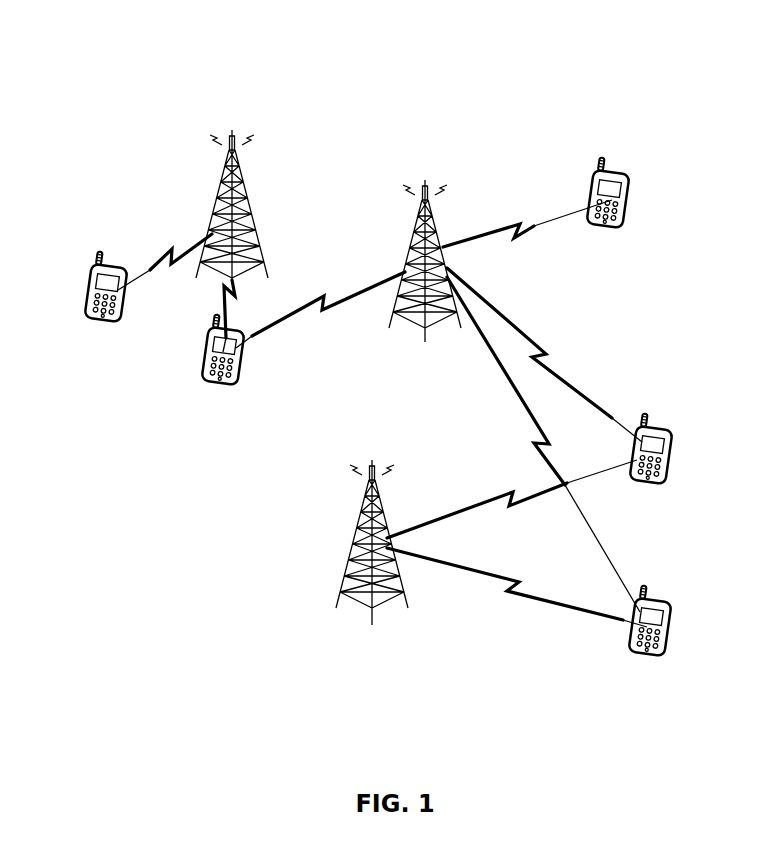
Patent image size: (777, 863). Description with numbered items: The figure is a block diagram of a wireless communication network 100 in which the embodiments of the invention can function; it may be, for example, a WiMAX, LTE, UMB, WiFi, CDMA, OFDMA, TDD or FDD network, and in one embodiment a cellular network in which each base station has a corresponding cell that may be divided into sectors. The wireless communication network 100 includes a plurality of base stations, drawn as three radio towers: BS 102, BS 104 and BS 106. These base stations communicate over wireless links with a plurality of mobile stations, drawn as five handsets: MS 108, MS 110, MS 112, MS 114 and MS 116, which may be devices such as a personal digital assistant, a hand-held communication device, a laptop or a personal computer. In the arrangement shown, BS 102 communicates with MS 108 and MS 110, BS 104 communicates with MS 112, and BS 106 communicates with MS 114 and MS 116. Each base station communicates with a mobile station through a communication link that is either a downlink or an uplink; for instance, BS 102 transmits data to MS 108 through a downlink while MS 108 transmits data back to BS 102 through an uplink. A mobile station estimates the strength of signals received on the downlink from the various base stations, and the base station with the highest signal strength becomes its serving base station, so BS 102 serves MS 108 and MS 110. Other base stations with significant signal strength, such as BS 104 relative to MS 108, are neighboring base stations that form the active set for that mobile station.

The wireless communication network 100 is at (114, 110).
The base station 102 is at (366, 518).
The base station 104 is at (420, 236).
The base station 106 is at (238, 168).
The mobile station 108 is at (670, 624).
The mobile station 110 is at (671, 452).
The mobile station 112 is at (629, 199).
The mobile station 114 is at (88, 273).
The mobile station 116 is at (243, 354).